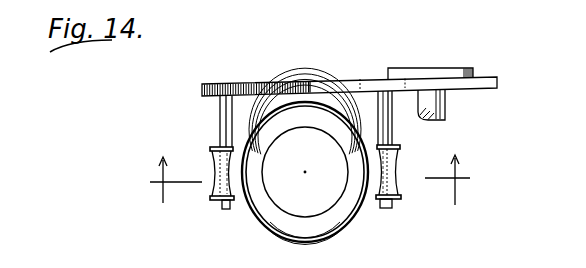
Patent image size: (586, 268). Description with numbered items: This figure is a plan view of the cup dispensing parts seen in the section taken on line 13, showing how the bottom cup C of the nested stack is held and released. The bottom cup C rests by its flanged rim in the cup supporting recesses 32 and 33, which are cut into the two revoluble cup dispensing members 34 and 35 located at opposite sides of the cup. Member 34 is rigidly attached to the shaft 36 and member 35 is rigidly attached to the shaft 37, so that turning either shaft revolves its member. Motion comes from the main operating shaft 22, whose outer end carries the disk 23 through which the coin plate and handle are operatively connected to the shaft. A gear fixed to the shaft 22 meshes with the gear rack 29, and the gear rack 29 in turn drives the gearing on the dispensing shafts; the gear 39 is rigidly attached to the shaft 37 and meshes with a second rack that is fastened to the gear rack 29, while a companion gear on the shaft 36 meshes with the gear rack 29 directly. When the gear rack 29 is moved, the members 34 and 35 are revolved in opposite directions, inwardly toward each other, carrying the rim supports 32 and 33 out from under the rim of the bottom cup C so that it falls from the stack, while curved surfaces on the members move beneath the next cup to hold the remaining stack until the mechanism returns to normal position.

The section line 13- 13 is at (306, 188).
The main operating shaft 22 is at (446, 112).
The disk 23 is at (471, 68).
The gear rack 29 is at (498, 84).
The cup supporting recess 32 is at (242, 206).
The cup supporting recess 33 is at (374, 205).
The revoluble cup dispensing member 34 is at (389, 156).
The revoluble cup dispensing member 35 is at (211, 161).
The shaft 36 is at (392, 122).
The shaft 37 is at (221, 127).
The gear 39 is at (205, 92).
The bottom cup C is at (341, 115).